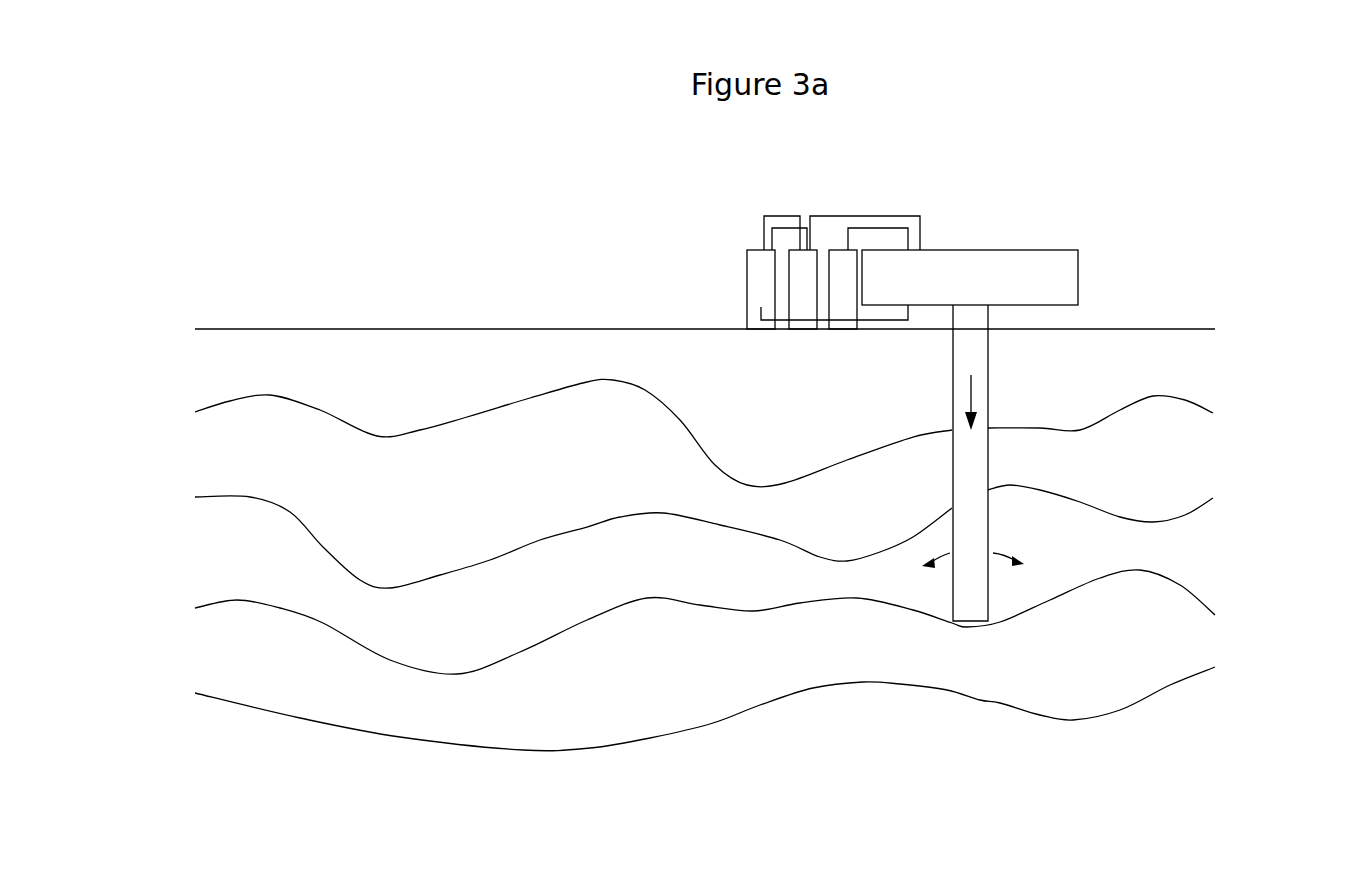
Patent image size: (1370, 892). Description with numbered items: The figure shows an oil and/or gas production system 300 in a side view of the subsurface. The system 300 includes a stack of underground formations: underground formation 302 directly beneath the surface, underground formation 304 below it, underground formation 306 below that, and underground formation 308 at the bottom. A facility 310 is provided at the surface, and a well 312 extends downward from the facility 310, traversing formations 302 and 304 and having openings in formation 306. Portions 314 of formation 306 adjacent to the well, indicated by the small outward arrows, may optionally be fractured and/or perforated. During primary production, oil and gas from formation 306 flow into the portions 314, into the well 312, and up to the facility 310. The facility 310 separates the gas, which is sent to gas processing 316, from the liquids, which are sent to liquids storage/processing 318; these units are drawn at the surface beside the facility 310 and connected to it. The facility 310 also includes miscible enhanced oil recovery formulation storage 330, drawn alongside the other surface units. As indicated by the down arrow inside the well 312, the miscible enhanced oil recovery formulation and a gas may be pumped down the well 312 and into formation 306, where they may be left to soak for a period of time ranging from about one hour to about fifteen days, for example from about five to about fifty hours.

The system 300 is at (583, 265).
The underground formation 302 is at (704, 430).
The underground formation 304 is at (704, 516).
The underground formation 306 is at (705, 598).
The underground formation 308 is at (705, 680).
The facility 310 is at (951, 289).
The well 312 is at (987, 358).
The portions 314 is at (925, 564).
The gas processing 316 is at (839, 273).
The liquids storage/processing 318 is at (807, 273).
The miscible enhanced oil recovery formulation storage 330 is at (760, 265).